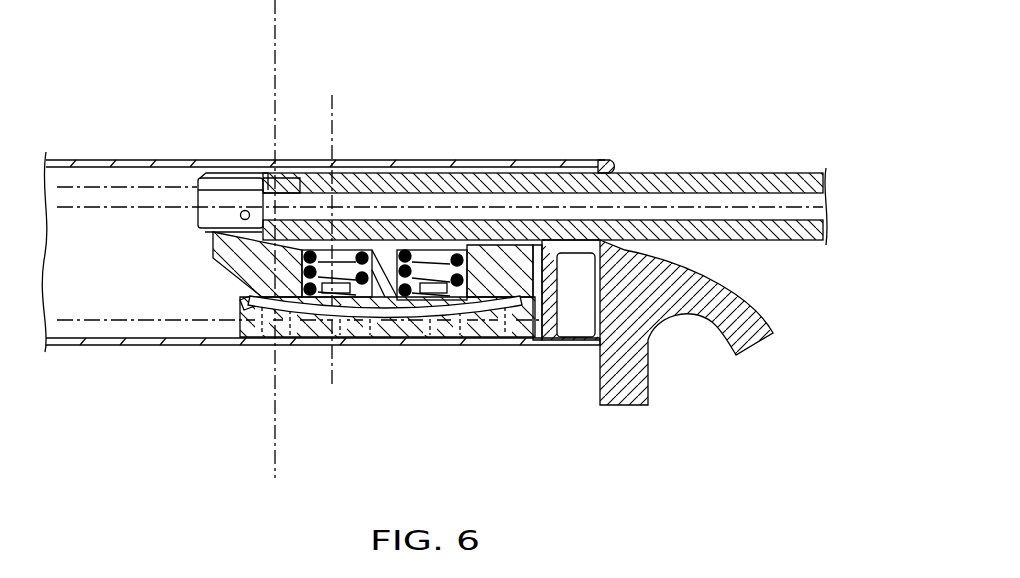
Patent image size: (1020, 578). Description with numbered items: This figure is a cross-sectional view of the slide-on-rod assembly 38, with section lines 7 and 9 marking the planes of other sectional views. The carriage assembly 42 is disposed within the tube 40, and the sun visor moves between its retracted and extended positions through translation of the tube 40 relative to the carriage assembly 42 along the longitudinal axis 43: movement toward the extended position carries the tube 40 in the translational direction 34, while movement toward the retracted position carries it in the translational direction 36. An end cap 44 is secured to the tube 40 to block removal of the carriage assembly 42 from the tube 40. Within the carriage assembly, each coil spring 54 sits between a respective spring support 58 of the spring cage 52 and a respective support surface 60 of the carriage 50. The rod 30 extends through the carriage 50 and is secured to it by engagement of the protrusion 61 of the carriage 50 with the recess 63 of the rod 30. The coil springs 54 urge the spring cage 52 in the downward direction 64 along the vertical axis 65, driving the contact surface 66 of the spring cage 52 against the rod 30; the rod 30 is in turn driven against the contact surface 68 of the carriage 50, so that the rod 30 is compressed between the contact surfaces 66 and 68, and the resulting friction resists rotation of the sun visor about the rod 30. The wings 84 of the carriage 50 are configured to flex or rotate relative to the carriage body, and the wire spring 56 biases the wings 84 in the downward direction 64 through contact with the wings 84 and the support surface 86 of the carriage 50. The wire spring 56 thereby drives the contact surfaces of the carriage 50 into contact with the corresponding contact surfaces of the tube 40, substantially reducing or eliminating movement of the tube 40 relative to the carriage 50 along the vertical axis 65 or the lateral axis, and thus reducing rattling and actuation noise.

The section line 7- 7 is at (337, 110).
The section line 9- 9 is at (280, 10).
The rod 30 is at (647, 175).
The translational direction 34 is at (152, 270).
The translational direction 36 is at (808, 370).
The slide-on-rod assembly 38 is at (186, 122).
The tube 40 is at (134, 160).
The carriage assembly 42 is at (648, 94).
The longitudinal axis 43 is at (142, 398).
The end cap 44 is at (647, 384).
The carriage 50 is at (518, 240).
The spring cage 52 is at (420, 187).
The coil spring 54 is at (322, 254).
The wire spring 56 is at (457, 310).
The spring support 58 is at (318, 292).
The support surface 60 is at (364, 250).
The protrusion 61 is at (222, 240).
The recess 63 is at (226, 178).
The downward direction 64 is at (707, 144).
The vertical axis 65 is at (98, 360).
The contact surface 66 is at (400, 173).
The contact surface 68 is at (470, 250).
The wings 84 is at (268, 336).
The support surface 86 is at (385, 304).